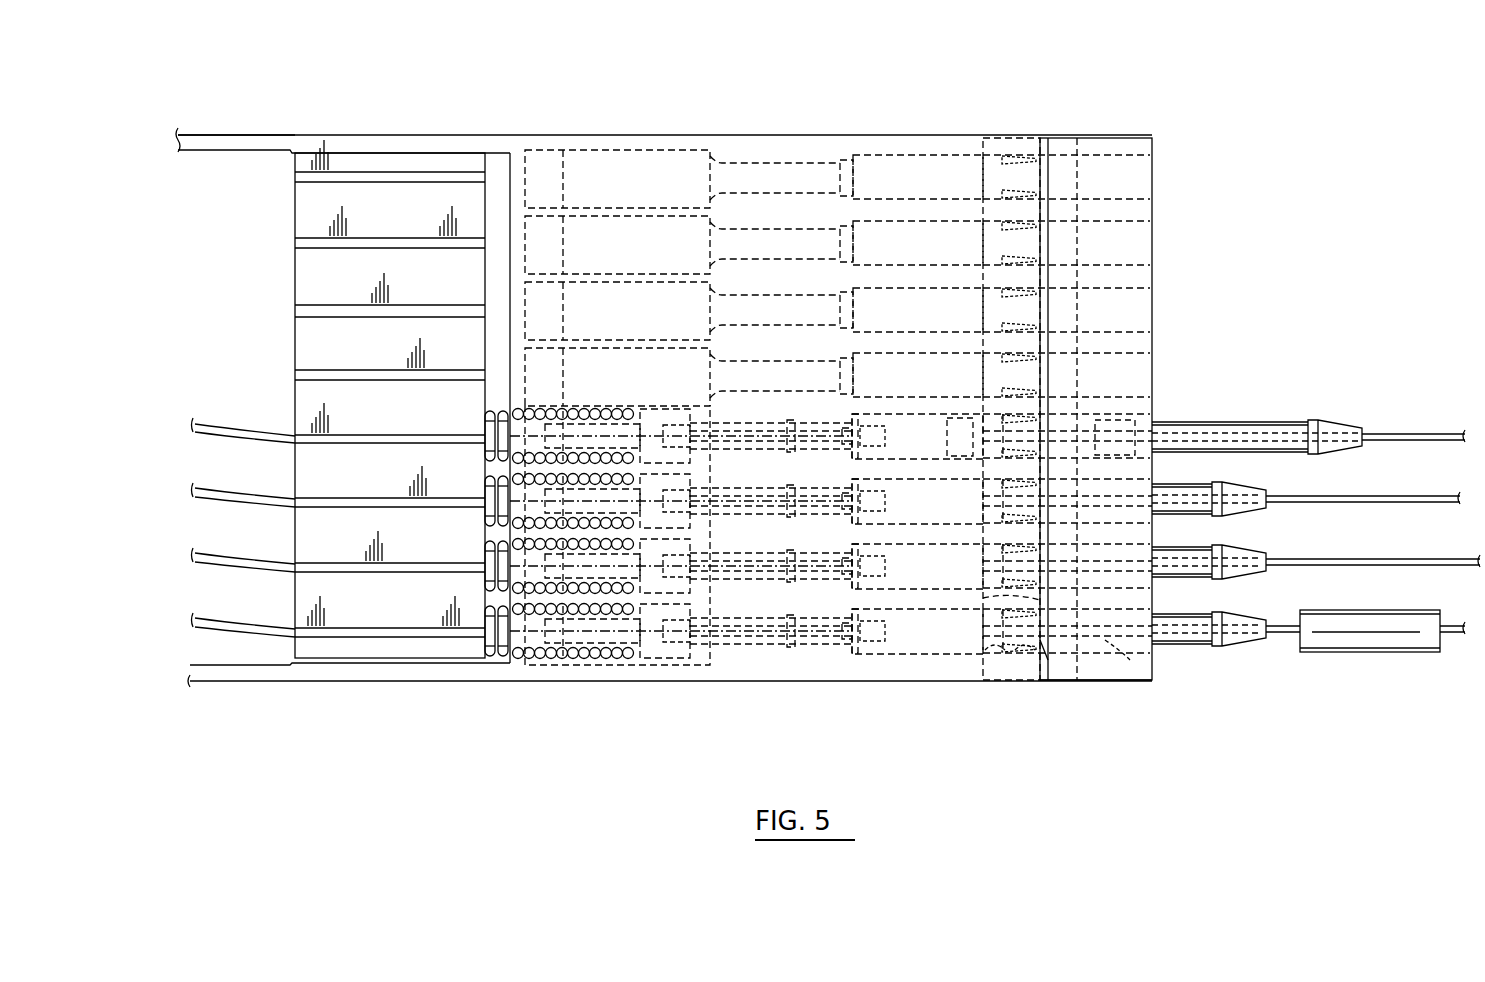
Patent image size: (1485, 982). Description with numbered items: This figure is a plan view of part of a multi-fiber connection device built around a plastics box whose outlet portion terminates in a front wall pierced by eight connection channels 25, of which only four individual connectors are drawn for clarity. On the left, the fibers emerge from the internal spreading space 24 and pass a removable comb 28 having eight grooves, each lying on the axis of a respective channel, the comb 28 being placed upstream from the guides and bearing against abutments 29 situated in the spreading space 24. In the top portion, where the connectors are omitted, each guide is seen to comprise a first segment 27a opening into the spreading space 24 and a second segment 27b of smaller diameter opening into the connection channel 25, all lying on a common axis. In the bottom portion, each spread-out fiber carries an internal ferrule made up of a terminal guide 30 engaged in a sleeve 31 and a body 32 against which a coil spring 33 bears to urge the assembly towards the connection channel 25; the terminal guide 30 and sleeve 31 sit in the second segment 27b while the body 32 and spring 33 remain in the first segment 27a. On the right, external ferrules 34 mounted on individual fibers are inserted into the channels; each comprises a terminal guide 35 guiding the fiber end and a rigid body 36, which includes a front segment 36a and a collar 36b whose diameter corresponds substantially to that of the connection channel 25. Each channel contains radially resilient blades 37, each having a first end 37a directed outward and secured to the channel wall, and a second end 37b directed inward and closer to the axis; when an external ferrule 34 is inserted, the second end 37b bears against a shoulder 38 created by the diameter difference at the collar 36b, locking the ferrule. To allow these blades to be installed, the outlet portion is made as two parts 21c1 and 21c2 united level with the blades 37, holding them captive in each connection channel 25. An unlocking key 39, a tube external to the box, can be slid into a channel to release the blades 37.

The first part of outlet portion 21c1 is at (985, 143).
The second part of outlet portion 21c2 is at (1098, 145).
The spreading space 24 is at (236, 245).
The connection channel 25 is at (895, 178).
The first segment of guide 27a is at (637, 175).
The second segment of guide 27b is at (782, 175).
The removable comb 28 is at (388, 163).
The abutment 29 is at (283, 148).
The terminal guide 30 is at (755, 648).
The sleeve 31 is at (795, 648).
The body 32 is at (660, 655).
The coil spring 33 is at (585, 660).
The external ferrule 34 is at (1333, 412).
The terminal guide 35 is at (810, 650).
The rigid body 36 is at (1188, 750).
The front segment 36a is at (1053, 653).
The collar 36b is at (1120, 650).
The radially resilient blade 37 is at (1008, 150).
The first end of blade 37a is at (1030, 658).
The second end of blade 37b is at (990, 657).
The shoulder 38 is at (1097, 430).
The unlocking key 39 is at (1370, 645).